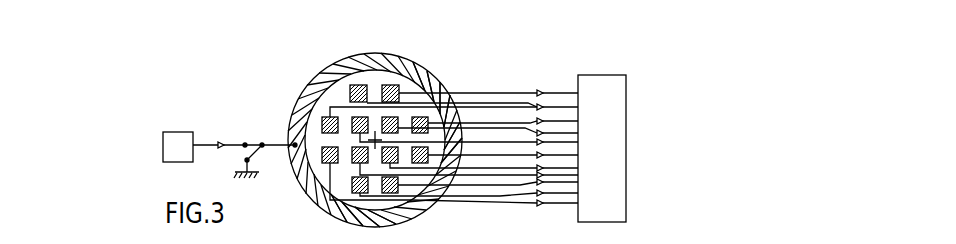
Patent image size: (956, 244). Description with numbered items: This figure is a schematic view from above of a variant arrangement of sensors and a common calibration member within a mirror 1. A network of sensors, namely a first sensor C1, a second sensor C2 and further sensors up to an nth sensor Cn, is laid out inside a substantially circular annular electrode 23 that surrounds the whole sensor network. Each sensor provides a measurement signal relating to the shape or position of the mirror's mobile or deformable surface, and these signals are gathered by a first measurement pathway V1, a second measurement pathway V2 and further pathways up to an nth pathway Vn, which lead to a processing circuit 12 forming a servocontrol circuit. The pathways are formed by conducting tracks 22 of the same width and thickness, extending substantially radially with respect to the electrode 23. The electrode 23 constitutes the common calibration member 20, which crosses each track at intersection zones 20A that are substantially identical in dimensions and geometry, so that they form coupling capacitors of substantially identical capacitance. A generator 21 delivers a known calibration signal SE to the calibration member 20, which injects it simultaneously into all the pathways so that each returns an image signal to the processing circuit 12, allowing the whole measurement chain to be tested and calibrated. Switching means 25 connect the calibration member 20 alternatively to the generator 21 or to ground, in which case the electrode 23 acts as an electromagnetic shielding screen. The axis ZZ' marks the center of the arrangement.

The mirror 1 is at (369, 127).
The processing circuit 12 is at (610, 163).
The common calibration member 20 is at (284, 114).
The intersection zones 20A is at (446, 100).
The generator 21 is at (187, 154).
The conducting tracks 22 is at (440, 98).
The electrode 23 is at (305, 92).
The switching means 25 is at (240, 155).
The first sensor C1 is at (391, 85).
The second sensor C2 is at (357, 85).
The nth sensor Cn is at (322, 158).
The calibration signal SE is at (245, 134).
The first measurement pathway V1 is at (505, 93).
The second measurement pathway V2 is at (520, 107).
The nth measurement pathway Vn is at (512, 204).
The axis ZZ' is at (330, 96).